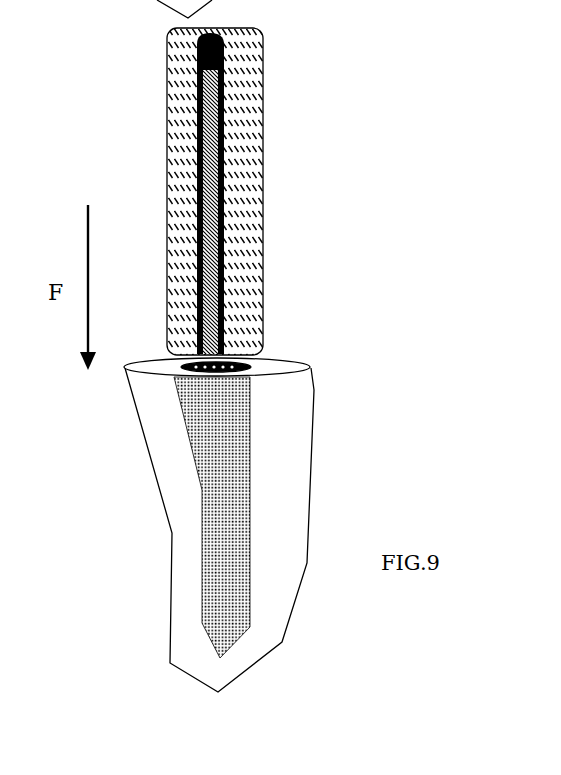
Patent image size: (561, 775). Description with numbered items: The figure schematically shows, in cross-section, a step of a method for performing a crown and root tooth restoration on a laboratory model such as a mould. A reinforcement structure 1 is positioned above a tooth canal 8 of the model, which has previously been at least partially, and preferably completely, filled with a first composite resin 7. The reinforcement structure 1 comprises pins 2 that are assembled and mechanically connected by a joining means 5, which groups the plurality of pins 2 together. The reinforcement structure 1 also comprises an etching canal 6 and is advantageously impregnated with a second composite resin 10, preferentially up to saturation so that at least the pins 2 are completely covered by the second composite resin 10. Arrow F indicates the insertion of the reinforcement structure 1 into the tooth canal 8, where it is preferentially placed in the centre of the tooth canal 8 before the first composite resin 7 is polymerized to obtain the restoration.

The reinforcement structure 1 is at (240, 164).
The pins 2 is at (223, 325).
The joining means 5 is at (223, 62).
The etching canal 6 is at (210, 273).
The first composite resin 7 is at (238, 418).
The tooth canal 8 is at (250, 498).
The second composite resin 10 is at (188, 133).